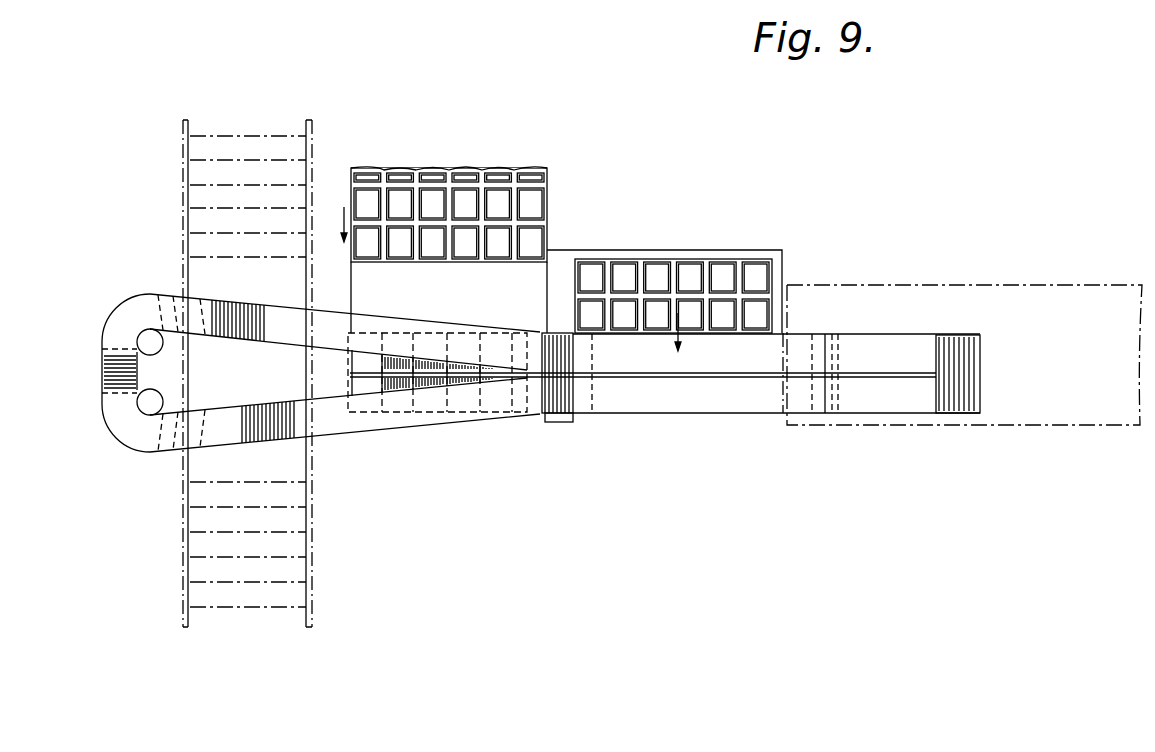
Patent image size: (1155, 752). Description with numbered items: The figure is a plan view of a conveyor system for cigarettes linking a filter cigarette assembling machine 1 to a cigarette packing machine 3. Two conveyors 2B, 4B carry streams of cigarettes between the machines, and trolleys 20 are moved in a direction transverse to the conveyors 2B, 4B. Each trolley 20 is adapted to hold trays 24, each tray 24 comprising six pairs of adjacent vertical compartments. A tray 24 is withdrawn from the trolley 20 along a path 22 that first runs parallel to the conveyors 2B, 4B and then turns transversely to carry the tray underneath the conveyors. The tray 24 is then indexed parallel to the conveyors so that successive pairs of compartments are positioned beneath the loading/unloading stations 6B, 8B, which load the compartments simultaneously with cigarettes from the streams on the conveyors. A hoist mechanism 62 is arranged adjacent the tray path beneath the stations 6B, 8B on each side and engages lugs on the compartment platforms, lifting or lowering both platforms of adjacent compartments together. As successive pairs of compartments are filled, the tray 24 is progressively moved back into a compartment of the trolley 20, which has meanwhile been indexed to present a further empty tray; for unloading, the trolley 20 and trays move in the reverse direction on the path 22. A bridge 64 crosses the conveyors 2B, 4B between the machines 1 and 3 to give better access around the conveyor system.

The filter cigarette assembling machine 1 is at (1052, 368).
The cigarette packing machine 3 is at (98, 402).
The trolley 20 is at (549, 195).
The tray path 22 is at (566, 300).
The tray 24 is at (773, 272).
The hoist mechanism 62 is at (553, 334).
The bridge 64 is at (312, 146).
The conveyor 2B is at (735, 372).
The conveyor 4B is at (760, 412).
The loading/unloading station 6B is at (568, 352).
The loading/unloading station 8B is at (575, 398).